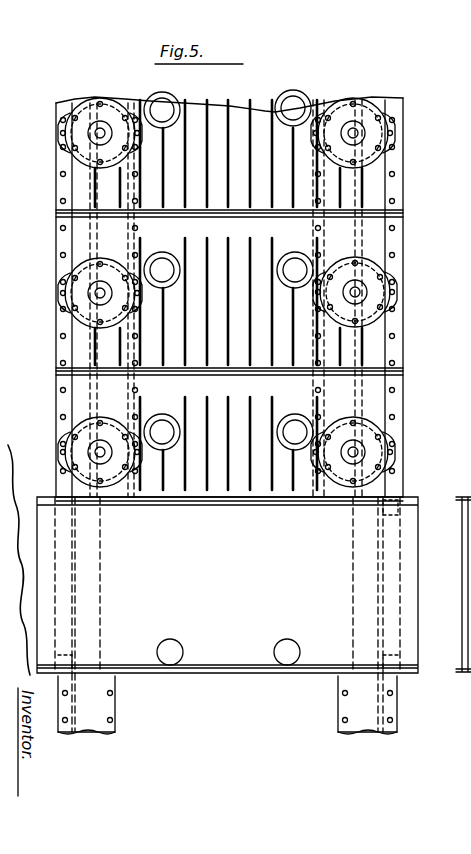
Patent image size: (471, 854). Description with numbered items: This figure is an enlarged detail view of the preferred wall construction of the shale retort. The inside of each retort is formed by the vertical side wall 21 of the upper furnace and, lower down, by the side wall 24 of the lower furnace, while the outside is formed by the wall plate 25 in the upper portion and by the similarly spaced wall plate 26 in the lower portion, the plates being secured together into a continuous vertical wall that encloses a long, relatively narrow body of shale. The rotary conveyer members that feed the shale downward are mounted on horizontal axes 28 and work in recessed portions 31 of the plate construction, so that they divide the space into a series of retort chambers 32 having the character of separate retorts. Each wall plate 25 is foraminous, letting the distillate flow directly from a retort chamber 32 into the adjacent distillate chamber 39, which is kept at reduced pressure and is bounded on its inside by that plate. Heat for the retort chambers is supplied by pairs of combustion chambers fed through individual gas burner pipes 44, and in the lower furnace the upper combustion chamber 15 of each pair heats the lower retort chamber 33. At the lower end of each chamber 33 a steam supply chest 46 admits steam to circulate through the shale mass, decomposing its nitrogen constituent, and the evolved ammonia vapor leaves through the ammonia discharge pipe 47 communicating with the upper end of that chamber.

The upper combustion chamber 15 is at (216, 631).
The side wall of the upper furnace 21 is at (113, 365).
The side wall of the lower furnace 24 is at (355, 645).
The wall plate 25 is at (362, 232).
The wall plate 26 is at (387, 594).
The horizontal axis 28 is at (357, 131).
The recessed portion 31 is at (372, 140).
The retort chamber 32 is at (345, 222).
The retort chamber 33 is at (362, 562).
The distillate chamber 39 is at (370, 197).
The gas burner pipe 44 is at (162, 434).
The steam supply chest 46 is at (470, 660).
The ammonia discharge pipe 47 is at (470, 512).